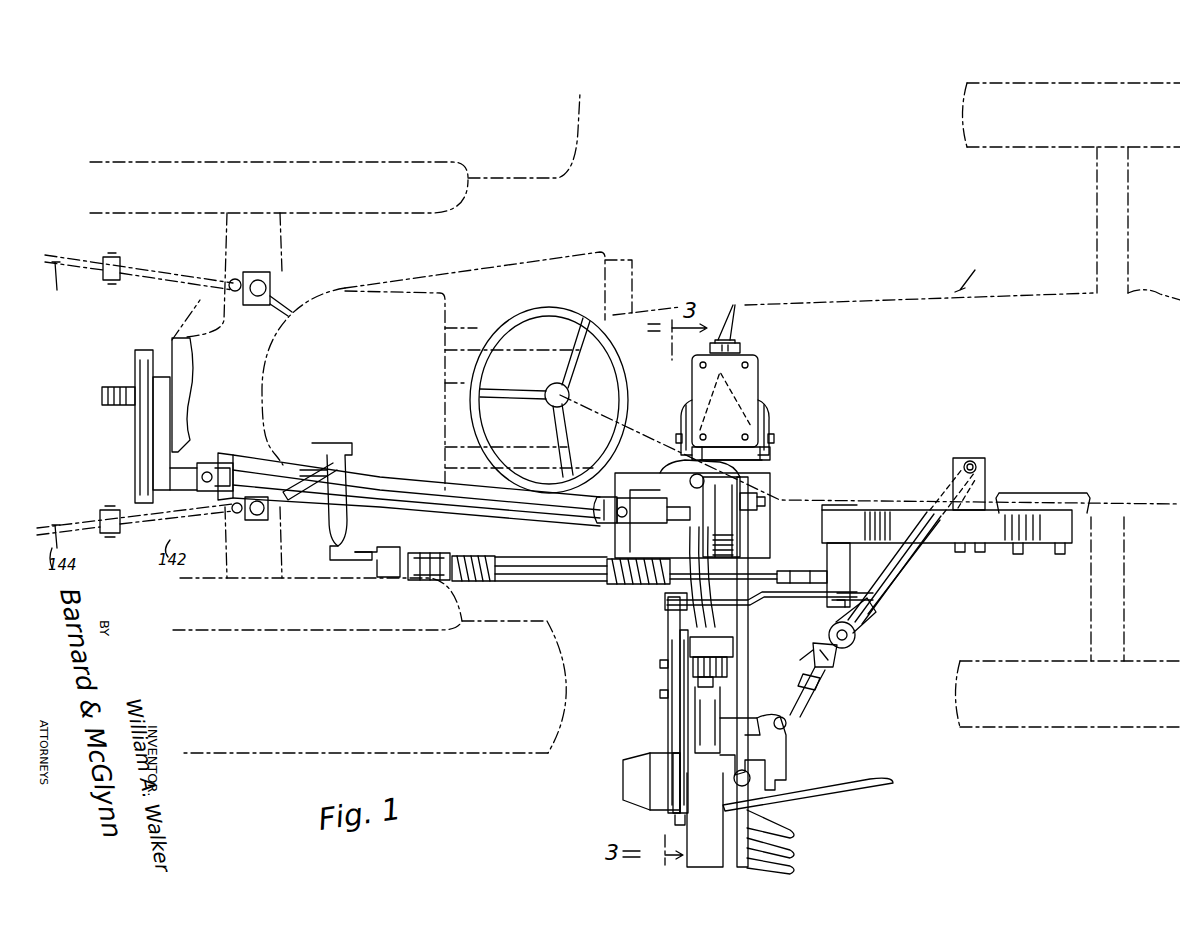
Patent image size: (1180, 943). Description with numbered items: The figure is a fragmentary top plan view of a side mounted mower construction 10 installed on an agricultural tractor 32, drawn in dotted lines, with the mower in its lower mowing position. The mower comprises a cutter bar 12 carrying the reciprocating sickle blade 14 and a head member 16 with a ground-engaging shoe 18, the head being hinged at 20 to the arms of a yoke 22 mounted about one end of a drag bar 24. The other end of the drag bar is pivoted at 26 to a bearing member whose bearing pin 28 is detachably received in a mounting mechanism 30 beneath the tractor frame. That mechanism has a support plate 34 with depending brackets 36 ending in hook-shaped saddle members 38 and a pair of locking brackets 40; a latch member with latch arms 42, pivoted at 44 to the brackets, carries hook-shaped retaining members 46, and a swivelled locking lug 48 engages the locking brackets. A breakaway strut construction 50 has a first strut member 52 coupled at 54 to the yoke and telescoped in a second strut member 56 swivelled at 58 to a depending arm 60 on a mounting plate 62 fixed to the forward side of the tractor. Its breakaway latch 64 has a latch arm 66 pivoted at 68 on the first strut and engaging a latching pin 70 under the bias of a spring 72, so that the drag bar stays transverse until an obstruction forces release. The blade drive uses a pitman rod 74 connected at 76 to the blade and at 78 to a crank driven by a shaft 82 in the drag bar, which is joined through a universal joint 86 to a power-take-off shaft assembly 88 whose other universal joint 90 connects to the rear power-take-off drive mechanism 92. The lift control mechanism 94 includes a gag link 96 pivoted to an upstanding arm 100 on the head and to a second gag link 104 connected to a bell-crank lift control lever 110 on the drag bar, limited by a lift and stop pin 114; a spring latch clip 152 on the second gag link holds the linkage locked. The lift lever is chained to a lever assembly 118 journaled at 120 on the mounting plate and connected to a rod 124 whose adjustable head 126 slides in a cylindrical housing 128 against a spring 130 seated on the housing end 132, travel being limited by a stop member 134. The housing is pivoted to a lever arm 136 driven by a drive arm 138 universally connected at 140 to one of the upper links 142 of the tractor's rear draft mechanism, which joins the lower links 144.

The side mounted mower construction 10 is at (893, 778).
The cutter bar 12 is at (765, 833).
The sickle blade 14 is at (792, 870).
The head member 16 is at (675, 818).
The ground-engaging skid or shoe 18 is at (623, 780).
The pivotal hinge 20 is at (812, 770).
The yoke 22 is at (770, 718).
The drag bar 24 is at (720, 623).
The pivotal connection 26 is at (690, 478).
The bearing shaft or pin 28 is at (770, 455).
The mounting mechanism 30 is at (768, 363).
The tractor 32 is at (983, 262).
The support plate 34 is at (760, 383).
The depending brackets 36 is at (681, 415).
The hook-shaped saddle member 38 is at (757, 503).
The locking brackets 40 is at (731, 314).
The latch arms 42 is at (686, 405).
The pivotal connection 44 is at (676, 438).
The hook-shaped retaining member 46 is at (768, 462).
The locking lug 48 is at (740, 345).
The breakaway strut construction 50 is at (900, 600).
The first strut member 52 is at (815, 690).
The pivotal coupling 54 is at (786, 723).
The second strut member 56 is at (905, 575).
The swivel connection 58 is at (975, 462).
The depending arm 60 is at (985, 480).
The mounting plate 62 is at (1000, 545).
The breakaway latch 64 is at (840, 655).
The latch arm 66 is at (830, 665).
The pivotal mounting 68 is at (813, 650).
The latching pin or lug 70 is at (875, 622).
The spring 72 is at (855, 637).
The pitman rod or arm 74 is at (748, 660).
The universal connection 76 is at (740, 770).
The pivotal connection 78 is at (740, 515).
The shaft 82 is at (643, 523).
The universal joint 86 is at (600, 523).
The power-take-off shaft assembly 88 is at (420, 470).
The universal joint 90 is at (207, 455).
The power-take-off drive mechanism 92 is at (135, 440).
The lift control mechanism 94 is at (660, 665).
The gag link 96 is at (640, 757).
The upstanding arm 100 is at (673, 790).
The second gag link 104 is at (660, 695).
The lift control lever 110 is at (690, 655).
The lift and stop pin 114 is at (690, 640).
The lever assembly 118 is at (850, 565).
The pivotal journal 120 is at (860, 510).
The rod 124 is at (790, 568).
The adjustable head 126 is at (440, 583).
The cylindrical housing 128 is at (537, 583).
The spring 130 is at (485, 583).
The end of cylindrical housing 132 is at (668, 612).
The stop member 134 is at (628, 586).
The lever arm 136 is at (335, 552).
The drive arm 138 is at (300, 478).
The universal pivotal connection 140 is at (255, 522).
The upper links 142 is at (176, 270).
The lower links 144 is at (52, 290).
The spring latch clip 152 is at (668, 722).